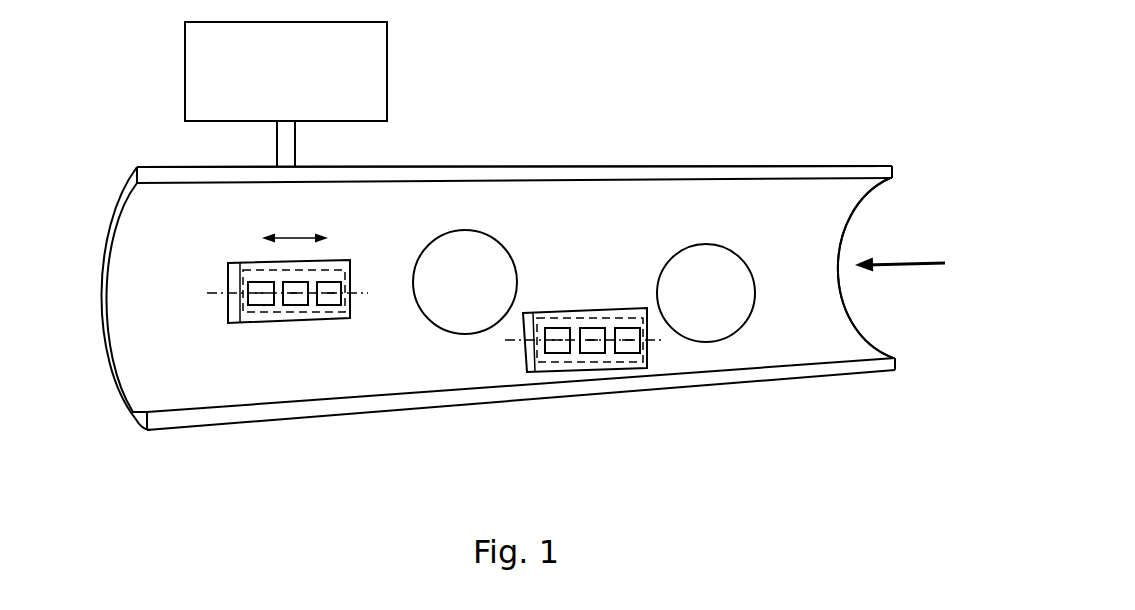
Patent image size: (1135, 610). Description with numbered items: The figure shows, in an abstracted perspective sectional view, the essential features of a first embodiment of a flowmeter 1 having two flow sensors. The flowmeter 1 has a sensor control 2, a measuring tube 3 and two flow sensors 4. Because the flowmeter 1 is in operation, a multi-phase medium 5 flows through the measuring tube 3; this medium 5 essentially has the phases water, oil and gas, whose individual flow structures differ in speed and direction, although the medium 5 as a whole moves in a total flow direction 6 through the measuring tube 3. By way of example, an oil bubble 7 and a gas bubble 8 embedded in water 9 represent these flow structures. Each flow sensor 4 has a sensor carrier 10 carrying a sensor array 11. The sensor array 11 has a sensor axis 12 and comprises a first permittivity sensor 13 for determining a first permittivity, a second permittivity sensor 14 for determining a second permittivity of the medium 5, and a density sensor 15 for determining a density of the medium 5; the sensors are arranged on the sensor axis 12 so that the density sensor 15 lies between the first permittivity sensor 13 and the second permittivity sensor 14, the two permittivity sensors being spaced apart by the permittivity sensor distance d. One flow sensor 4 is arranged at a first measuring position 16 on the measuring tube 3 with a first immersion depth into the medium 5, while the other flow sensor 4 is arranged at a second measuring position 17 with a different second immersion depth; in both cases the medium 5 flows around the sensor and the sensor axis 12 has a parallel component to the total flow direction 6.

The flowmeter 1 is at (632, 95).
The sensor control 2 is at (216, 57).
The measuring tube 3 is at (445, 168).
The flow sensor 4 is at (452, 359).
The multi-phase medium 5 is at (780, 212).
The total flow direction 6 is at (895, 260).
The oil bubble 7 is at (474, 297).
The gas bubble 8 is at (715, 310).
The water 9 is at (604, 232).
The sensor carrier 10 is at (236, 316).
The sensor array 11 is at (224, 281).
The sensor axis 12 is at (207, 298).
The first permittivity sensor 13 is at (256, 308).
The second permittivity sensor 14 is at (330, 308).
The density sensor 15 is at (302, 308).
The first measuring position 16 is at (199, 359).
The second measuring position 17 is at (660, 379).